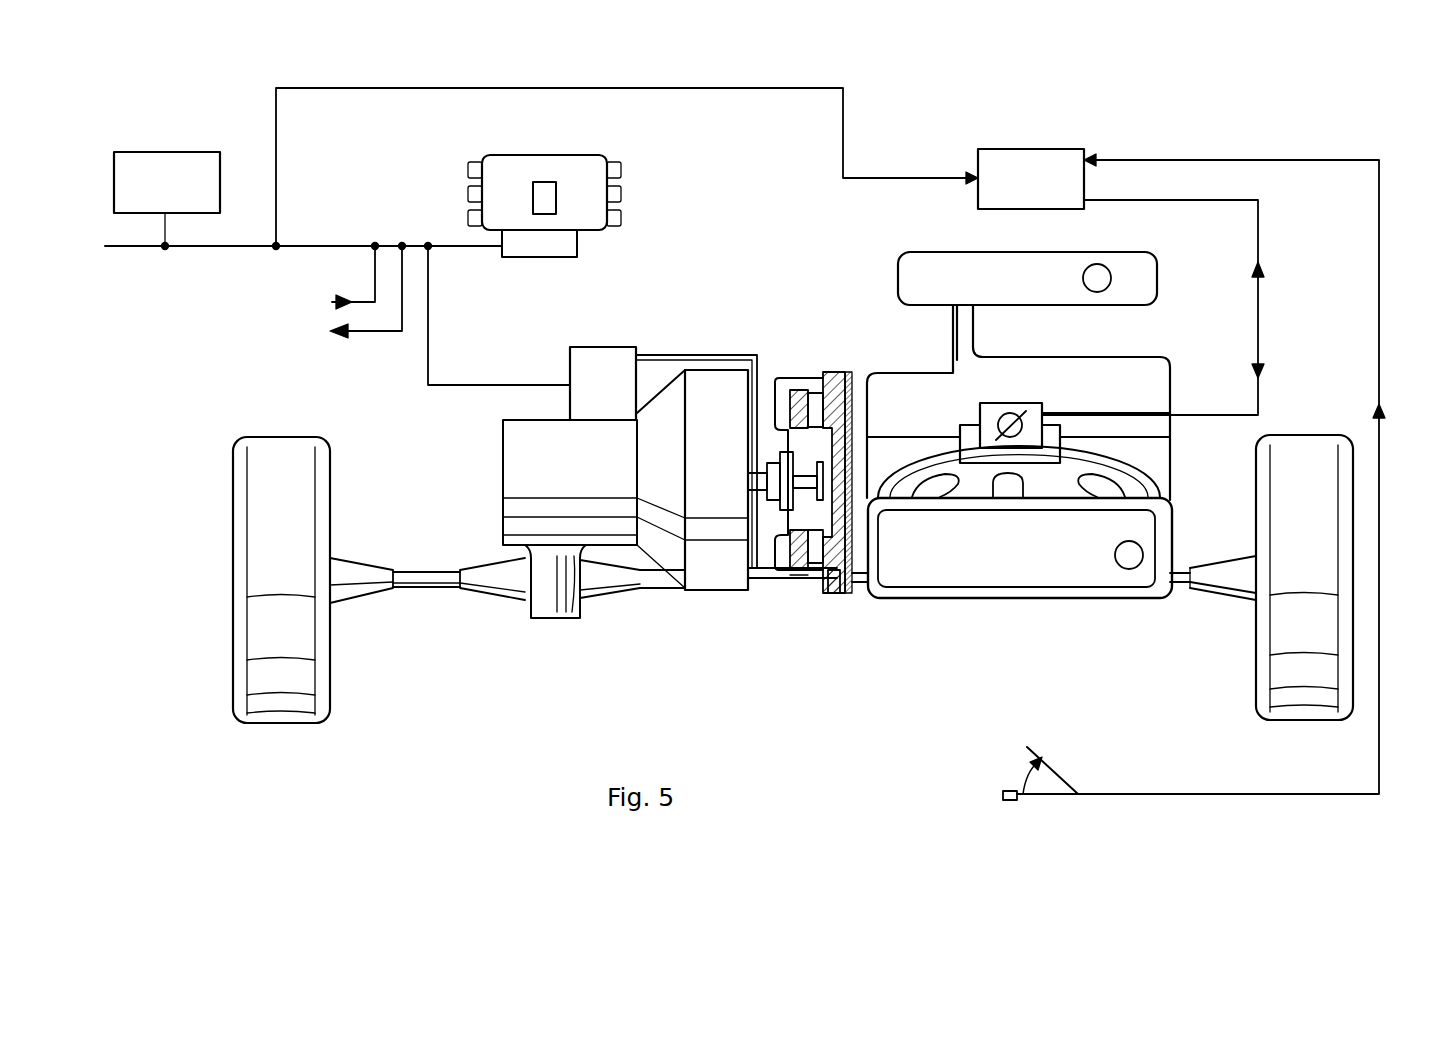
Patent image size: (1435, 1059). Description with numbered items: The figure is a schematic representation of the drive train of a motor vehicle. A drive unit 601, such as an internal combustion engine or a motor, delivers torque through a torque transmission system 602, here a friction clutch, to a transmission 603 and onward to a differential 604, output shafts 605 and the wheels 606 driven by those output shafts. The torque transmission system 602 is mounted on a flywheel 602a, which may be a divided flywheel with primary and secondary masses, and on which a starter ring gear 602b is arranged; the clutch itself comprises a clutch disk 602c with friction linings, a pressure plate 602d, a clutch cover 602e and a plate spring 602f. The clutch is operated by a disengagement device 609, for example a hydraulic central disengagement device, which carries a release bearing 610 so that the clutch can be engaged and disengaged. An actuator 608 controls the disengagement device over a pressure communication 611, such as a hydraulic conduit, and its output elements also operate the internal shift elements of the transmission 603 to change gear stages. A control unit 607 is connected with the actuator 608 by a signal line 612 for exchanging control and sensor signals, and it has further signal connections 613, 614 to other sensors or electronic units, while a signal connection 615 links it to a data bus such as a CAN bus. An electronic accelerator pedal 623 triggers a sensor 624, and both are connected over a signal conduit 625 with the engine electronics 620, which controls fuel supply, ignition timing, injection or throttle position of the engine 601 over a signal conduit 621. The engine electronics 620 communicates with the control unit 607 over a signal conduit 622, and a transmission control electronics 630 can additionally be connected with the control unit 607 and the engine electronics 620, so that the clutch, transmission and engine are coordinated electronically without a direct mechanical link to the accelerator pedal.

The drive unit 601 is at (1071, 402).
The torque transmission system 602 is at (838, 366).
The flywheel 602a is at (834, 590).
The starter ring gear 602b is at (850, 372).
The clutch disk 602c is at (812, 395).
The pressure plate 602d is at (800, 390).
The clutch cover 602e is at (797, 580).
The plate spring 602f is at (770, 390).
The transmission 603 is at (717, 543).
The differential 604 is at (545, 590).
The output shafts 605 is at (430, 577).
The wheels 606 is at (258, 574).
The control unit 607 is at (510, 170).
The actuator 608 is at (579, 397).
The disengagement device 609 is at (748, 482).
The release bearing 610 is at (782, 527).
The pressure communication 611 is at (688, 355).
The signal line 612 is at (500, 383).
The signal connection 613 is at (366, 333).
The signal connection 614 is at (362, 300).
The signal connection 615 is at (356, 245).
The engine electronics 620 is at (1007, 194).
The signal conduit 621 is at (1260, 305).
The signal conduit 622 is at (483, 86).
The electronic accelerator pedal 623 is at (1060, 770).
The sensor 624 is at (1005, 792).
The signal conduit 625 is at (1382, 305).
The transmission control electronics 630 is at (141, 199).